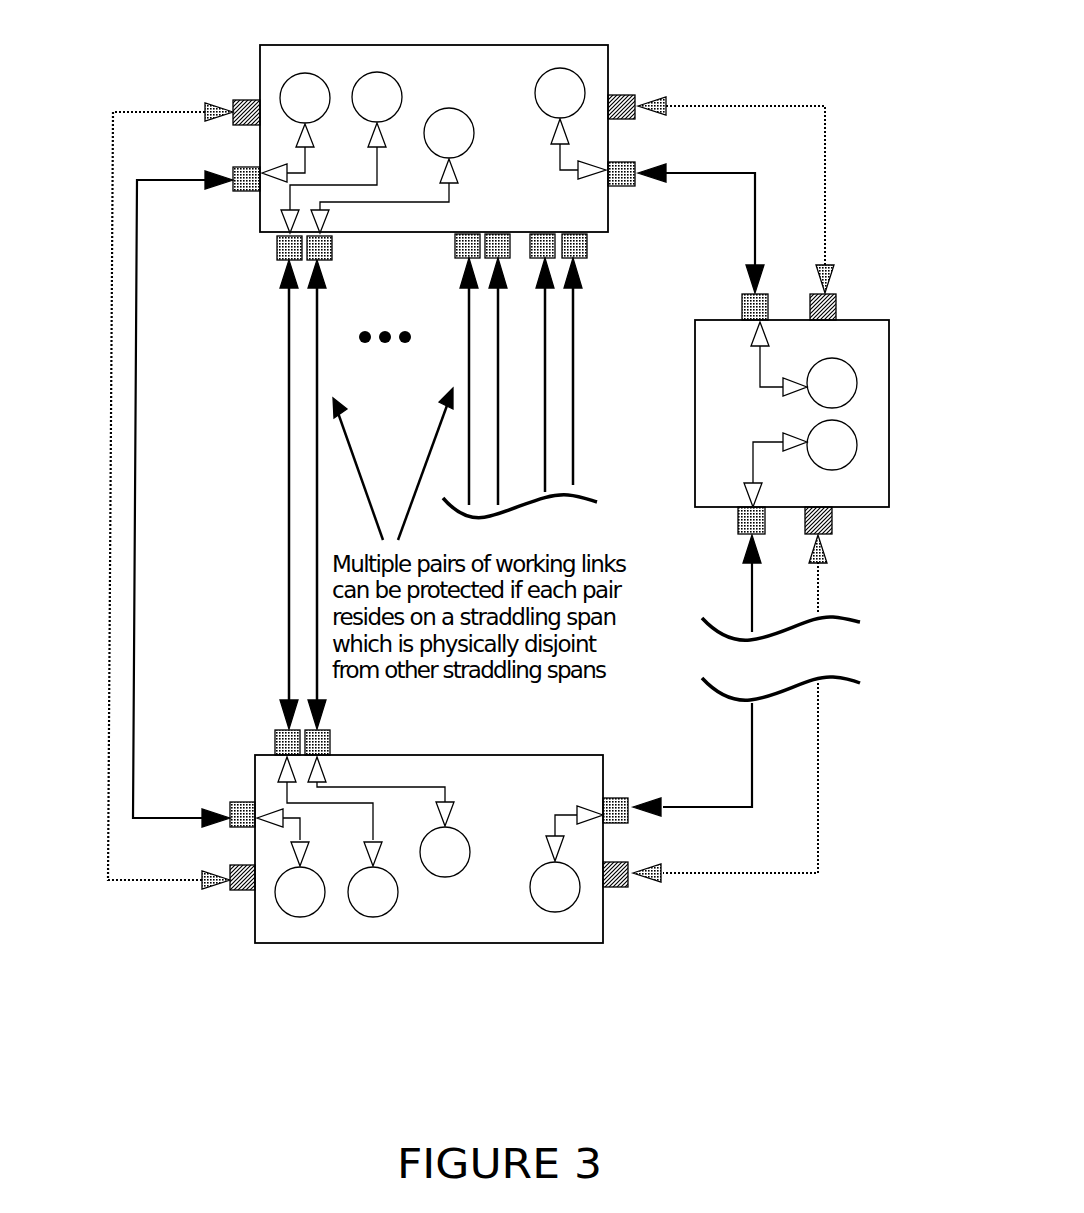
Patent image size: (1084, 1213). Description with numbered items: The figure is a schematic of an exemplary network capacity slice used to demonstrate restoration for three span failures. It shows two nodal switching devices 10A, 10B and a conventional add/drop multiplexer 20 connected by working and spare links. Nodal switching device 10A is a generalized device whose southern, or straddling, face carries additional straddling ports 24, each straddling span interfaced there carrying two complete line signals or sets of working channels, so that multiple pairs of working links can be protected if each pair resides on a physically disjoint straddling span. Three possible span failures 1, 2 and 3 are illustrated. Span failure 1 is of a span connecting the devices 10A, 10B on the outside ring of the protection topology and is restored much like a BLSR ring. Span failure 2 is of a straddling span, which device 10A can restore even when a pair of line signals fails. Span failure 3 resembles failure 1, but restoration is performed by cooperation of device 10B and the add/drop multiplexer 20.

The nodal switching device 10A is at (626, 42).
The nodal switching device 10B is at (538, 966).
The add/drop multiplexer 20 is at (899, 418).
The straddling ports 24 is at (446, 251).
The span failure 1 is at (157, 496).
The span failure 2 is at (229, 499).
The span failure 3 is at (751, 489).